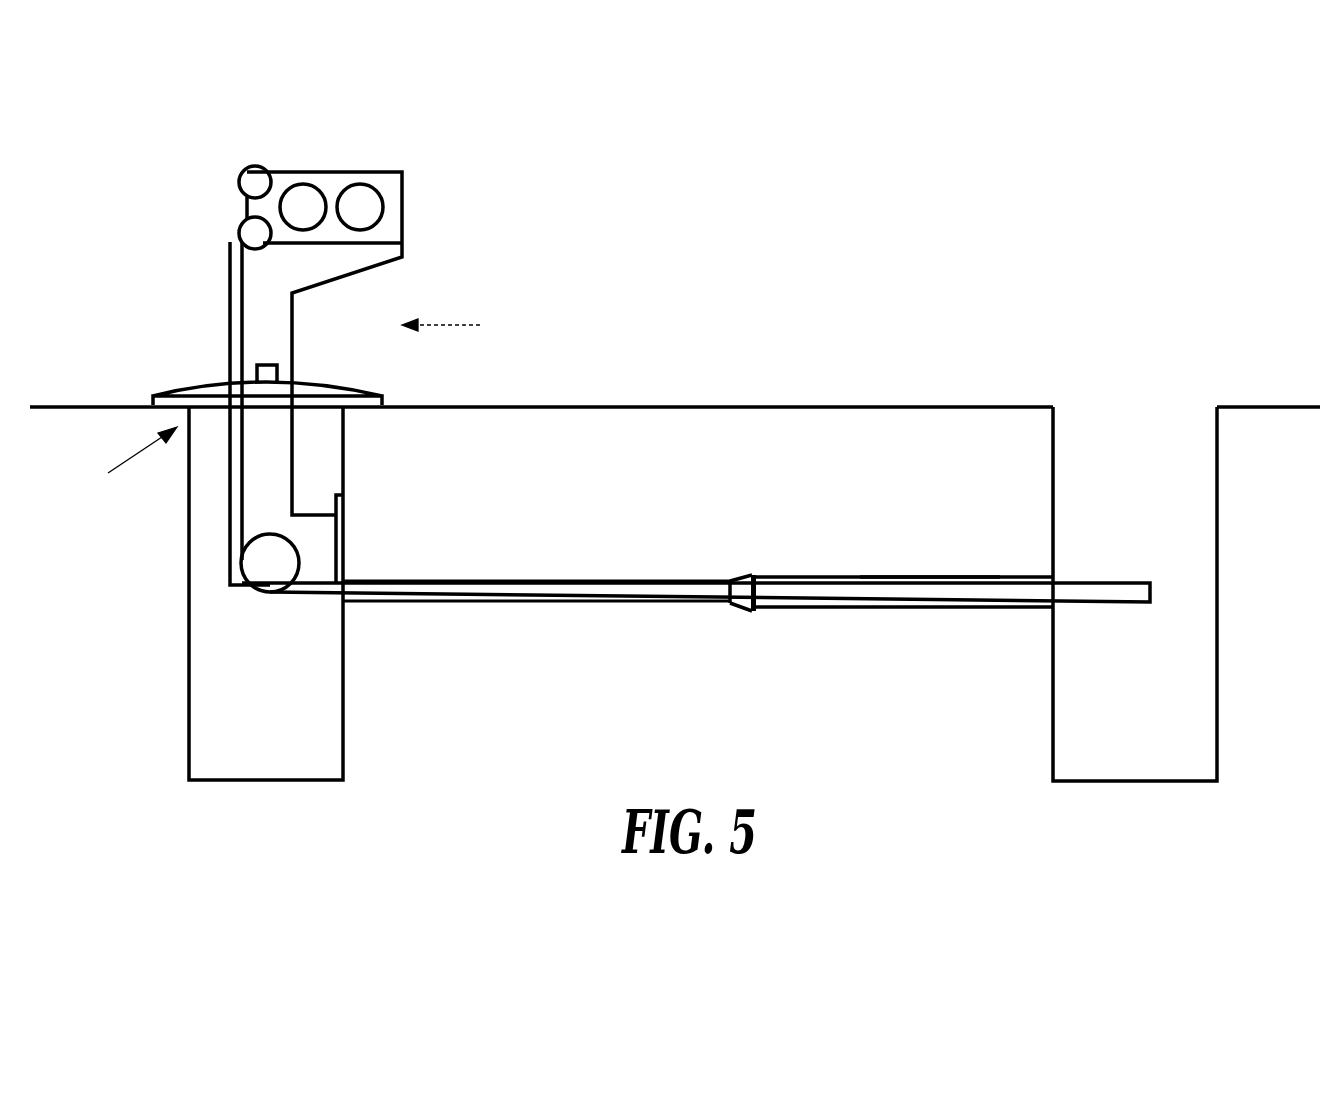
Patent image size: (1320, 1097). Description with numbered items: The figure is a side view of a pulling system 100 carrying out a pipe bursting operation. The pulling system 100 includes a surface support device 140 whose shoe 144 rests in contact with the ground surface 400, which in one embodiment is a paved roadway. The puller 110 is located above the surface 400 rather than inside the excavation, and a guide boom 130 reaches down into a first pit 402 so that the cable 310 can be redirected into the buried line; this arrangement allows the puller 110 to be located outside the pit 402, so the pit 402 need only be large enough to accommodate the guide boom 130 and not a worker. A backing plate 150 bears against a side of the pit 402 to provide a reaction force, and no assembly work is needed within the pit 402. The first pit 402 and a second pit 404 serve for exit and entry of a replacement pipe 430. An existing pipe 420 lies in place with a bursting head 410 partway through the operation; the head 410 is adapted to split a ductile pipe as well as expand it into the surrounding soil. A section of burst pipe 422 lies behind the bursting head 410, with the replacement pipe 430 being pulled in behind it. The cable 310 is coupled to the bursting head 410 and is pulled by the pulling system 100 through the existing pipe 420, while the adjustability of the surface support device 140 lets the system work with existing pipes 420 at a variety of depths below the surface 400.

The pulling system 100 is at (466, 324).
The puller 110 is at (335, 172).
The guide boom 130 is at (228, 313).
The surface support device 140 is at (117, 456).
The shoe 144 is at (205, 387).
The backing plate 150 is at (347, 525).
The cable 310 is at (502, 587).
The ground surface 400 is at (607, 405).
The first pit 402 is at (347, 695).
The second pit 404 is at (1050, 715).
The bursting head 410 is at (742, 577).
The existing pipe 420 is at (535, 602).
The burst pipe 422 is at (905, 577).
The replacement pipe 430 is at (837, 605).